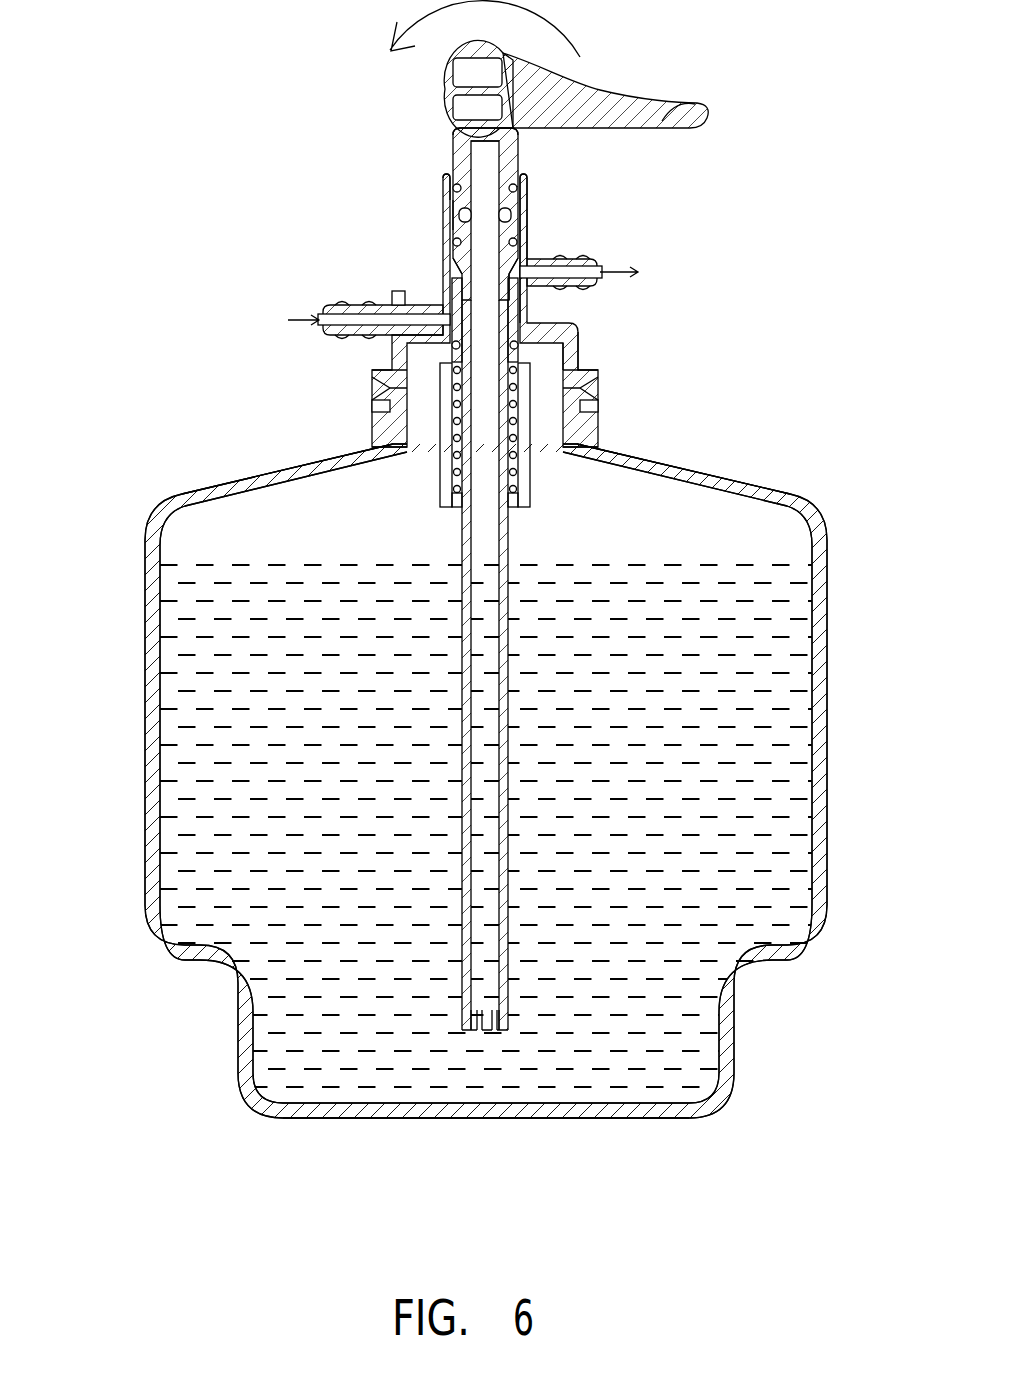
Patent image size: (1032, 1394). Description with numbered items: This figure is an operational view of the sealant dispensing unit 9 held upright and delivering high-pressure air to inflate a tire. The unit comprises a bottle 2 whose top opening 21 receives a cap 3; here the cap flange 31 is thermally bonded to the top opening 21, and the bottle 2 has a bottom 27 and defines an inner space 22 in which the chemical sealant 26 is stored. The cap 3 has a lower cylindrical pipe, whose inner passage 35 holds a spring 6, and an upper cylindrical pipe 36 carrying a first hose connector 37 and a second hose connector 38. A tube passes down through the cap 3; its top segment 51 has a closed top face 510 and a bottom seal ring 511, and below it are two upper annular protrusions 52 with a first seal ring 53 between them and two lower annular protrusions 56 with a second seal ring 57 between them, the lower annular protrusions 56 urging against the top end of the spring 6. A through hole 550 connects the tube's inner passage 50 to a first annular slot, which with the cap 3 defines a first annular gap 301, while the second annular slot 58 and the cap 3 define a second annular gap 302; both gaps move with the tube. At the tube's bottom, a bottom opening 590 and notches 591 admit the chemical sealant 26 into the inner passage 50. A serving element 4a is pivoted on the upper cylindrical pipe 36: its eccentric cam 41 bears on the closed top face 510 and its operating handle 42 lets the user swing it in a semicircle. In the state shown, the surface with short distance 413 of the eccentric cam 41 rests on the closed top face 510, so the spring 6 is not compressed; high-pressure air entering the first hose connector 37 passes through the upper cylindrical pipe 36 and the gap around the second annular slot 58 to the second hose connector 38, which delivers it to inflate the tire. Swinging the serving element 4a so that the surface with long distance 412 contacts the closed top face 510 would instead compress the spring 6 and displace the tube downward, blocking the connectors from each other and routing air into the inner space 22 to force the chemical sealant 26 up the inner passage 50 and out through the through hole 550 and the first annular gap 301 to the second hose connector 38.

The sealant dispensing unit 9 is at (105, 121).
The bottle 2 is at (150, 882).
The top opening 21 is at (585, 398).
The inner space 22 is at (603, 495).
The chemical sealant 26 is at (720, 676).
The bottom 27 is at (603, 1118).
The cap 3 is at (570, 340).
The first annular gap 301 is at (453, 217).
The second annular gap 302 is at (530, 285).
The cap flange 31 is at (598, 380).
The inner passage 35 is at (388, 420).
The upper cylindrical pipe 36 is at (528, 224).
The first hose connector 37 is at (360, 305).
The second hose connector 38 is at (585, 257).
The serving element 4a is at (555, 69).
The eccentric cam 41 is at (460, 80).
The surface with long distance 412 is at (491, 51).
The surface with short distance 413 is at (495, 128).
The operating handle 42 is at (710, 118).
The inner passage 50 is at (483, 520).
The top segment 51 is at (453, 160).
The closed top face 510 is at (462, 118).
The bottom seal ring 511 is at (455, 188).
The upper annular protrusions 52 is at (455, 194).
The first seal ring 53 is at (461, 215).
The through hole 550 is at (530, 205).
The lower annular protrusions 56 is at (453, 347).
The second seal ring 57 is at (456, 372).
The second annular slot 58 is at (513, 290).
The bottom opening 590 is at (483, 1033).
The notches 591 is at (466, 1030).
The spring 6 is at (518, 428).